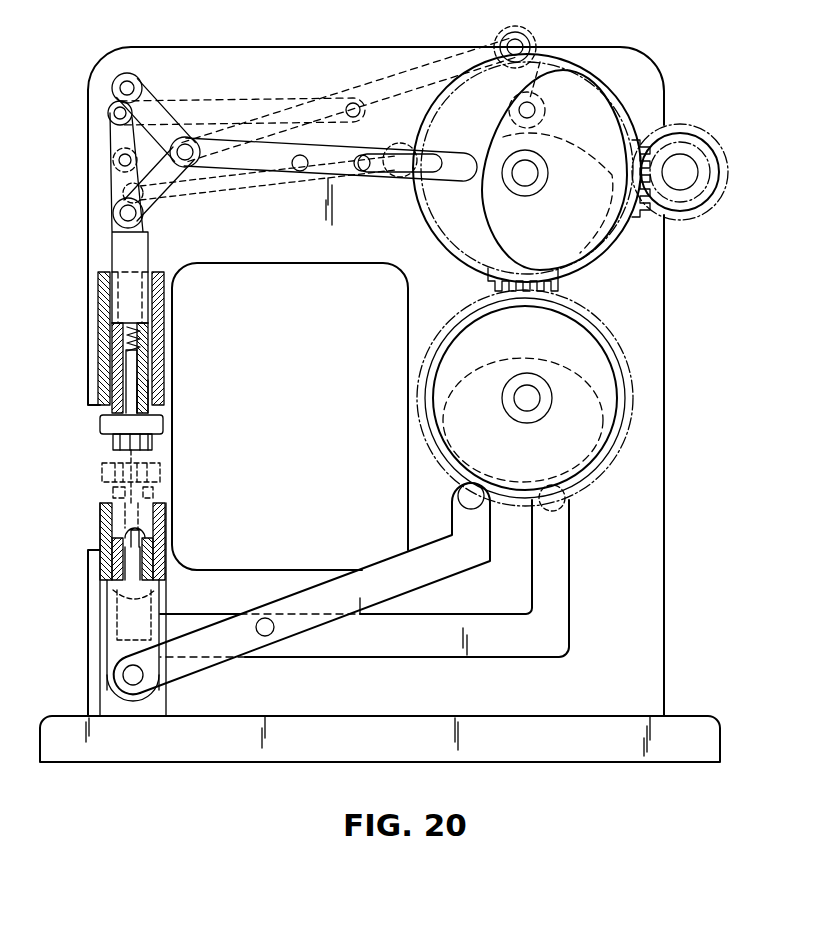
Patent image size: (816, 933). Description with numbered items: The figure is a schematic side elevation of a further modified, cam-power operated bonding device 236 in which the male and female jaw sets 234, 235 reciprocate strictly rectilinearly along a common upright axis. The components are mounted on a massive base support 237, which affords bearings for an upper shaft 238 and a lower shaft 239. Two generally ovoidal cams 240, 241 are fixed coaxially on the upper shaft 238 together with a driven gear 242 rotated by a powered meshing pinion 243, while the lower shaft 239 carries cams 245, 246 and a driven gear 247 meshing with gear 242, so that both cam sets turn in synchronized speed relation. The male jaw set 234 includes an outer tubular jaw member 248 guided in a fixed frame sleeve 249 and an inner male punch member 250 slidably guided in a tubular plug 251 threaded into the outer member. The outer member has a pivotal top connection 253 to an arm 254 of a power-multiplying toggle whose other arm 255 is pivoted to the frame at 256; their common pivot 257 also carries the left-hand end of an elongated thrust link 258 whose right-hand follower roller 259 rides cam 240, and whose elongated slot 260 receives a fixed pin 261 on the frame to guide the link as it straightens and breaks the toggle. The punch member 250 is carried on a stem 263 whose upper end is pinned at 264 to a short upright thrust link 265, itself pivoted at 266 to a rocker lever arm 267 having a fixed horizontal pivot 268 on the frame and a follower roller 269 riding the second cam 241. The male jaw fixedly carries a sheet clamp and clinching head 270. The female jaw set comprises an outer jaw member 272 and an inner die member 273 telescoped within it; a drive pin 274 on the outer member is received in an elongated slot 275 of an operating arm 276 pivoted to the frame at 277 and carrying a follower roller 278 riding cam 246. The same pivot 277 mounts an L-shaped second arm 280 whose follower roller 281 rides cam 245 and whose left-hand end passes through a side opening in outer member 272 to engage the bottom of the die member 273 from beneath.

The male jaw set 234 is at (95, 423).
The female jaw set 235 is at (88, 528).
The device 236 is at (411, 404).
The base support 237 is at (658, 576).
The upper shaft 238 is at (533, 166).
The lower shaft 239 is at (530, 410).
The cam 240 is at (618, 228).
The cam 241 is at (457, 266).
The driven gear 242 is at (634, 142).
The pinion 243 is at (722, 160).
The cam 245 is at (614, 416).
The cam 246 is at (612, 366).
The driven gear 247 is at (600, 330).
The outer tubular jaw member 248 is at (150, 324).
The frame sleeve 249 is at (157, 359).
The inner male punch member 250 is at (148, 391).
The tubular plug 251 is at (112, 386).
The pivotal top connection 253 is at (122, 218).
The toggle arm 254 is at (165, 203).
The toggle arm 255 is at (150, 90).
The pivot 256 is at (128, 82).
The common pivot 257 is at (193, 147).
The thrust link 258 is at (277, 172).
The follower roller 259 is at (496, 110).
The elongated slot 260 is at (380, 172).
The fixed pin 261 is at (364, 156).
The stem 263 is at (126, 339).
The pin 264 is at (122, 162).
The upright thrust link 265 is at (112, 138).
The pivotal connection 266 is at (115, 111).
The rocker lever arm 267 is at (318, 108).
The fixed horizontal pivot 268 is at (351, 103).
The follower roller 269 is at (531, 44).
The sheet clamp and clinching head 270 is at (165, 470).
The outer jaw member 272 is at (160, 541).
The inner jaw or die member 273 is at (164, 517).
The drive pin 274 is at (124, 678).
The elongated slot 275 is at (183, 673).
The operating arm 276 is at (302, 632).
The pivot 277 is at (256, 620).
The follower roller 278 is at (458, 500).
The second arm 280 is at (447, 657).
The follower roller 281 is at (563, 509).